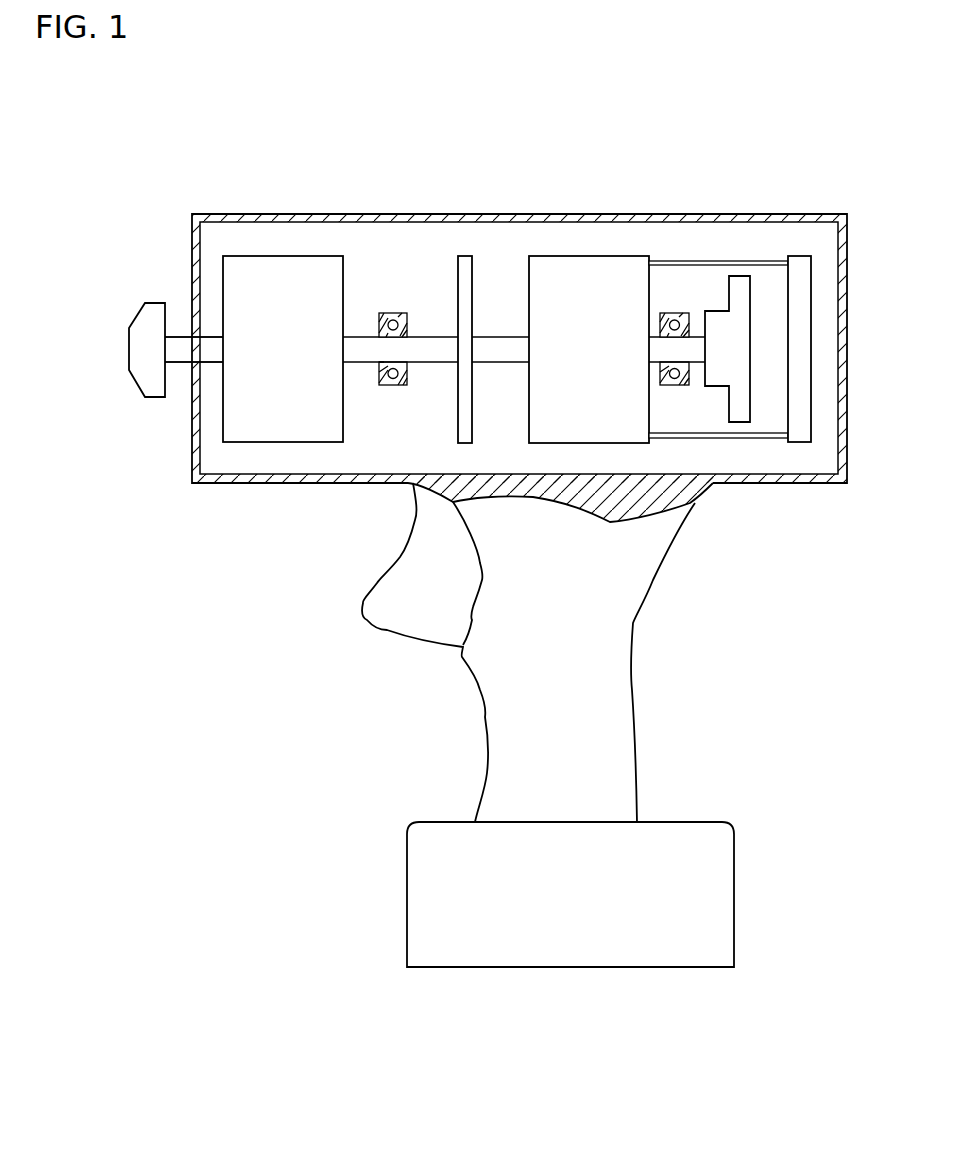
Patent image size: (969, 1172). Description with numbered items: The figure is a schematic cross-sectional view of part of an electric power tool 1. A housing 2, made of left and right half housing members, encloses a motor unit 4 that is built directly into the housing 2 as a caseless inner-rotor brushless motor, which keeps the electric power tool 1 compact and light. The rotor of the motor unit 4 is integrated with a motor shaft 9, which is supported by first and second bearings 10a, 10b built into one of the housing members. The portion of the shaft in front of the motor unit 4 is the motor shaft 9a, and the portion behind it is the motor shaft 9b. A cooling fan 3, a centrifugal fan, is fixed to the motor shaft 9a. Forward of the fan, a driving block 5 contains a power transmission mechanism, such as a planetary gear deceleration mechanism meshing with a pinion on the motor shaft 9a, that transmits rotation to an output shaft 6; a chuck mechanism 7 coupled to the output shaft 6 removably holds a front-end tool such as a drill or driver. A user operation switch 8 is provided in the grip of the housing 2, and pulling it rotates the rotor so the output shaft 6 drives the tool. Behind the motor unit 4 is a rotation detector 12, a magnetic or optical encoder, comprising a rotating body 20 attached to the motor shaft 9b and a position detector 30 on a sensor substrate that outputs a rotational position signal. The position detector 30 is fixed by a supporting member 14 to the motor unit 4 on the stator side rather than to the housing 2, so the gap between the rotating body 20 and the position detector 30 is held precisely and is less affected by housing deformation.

The electric power tool 1 is at (533, 1091).
The housing 2 is at (349, 214).
The cooling fan 3 is at (457, 257).
The motor unit 4 is at (587, 255).
The driving block 5 is at (285, 255).
The output shaft 6 is at (183, 335).
The chuck mechanism 7 is at (140, 308).
The user operation switch 8 is at (390, 583).
The motor shaft 9 is at (647, 113).
The motor shaft (front portion) 9a is at (492, 336).
The motor shaft (rear portion) 9b is at (655, 336).
The first bearing 10a is at (390, 312).
The second bearing 10b is at (672, 312).
The rotation detector 12 is at (757, 128).
The supporting member 14 is at (708, 260).
The rotating body 20 is at (738, 276).
The position detector 30 is at (798, 256).